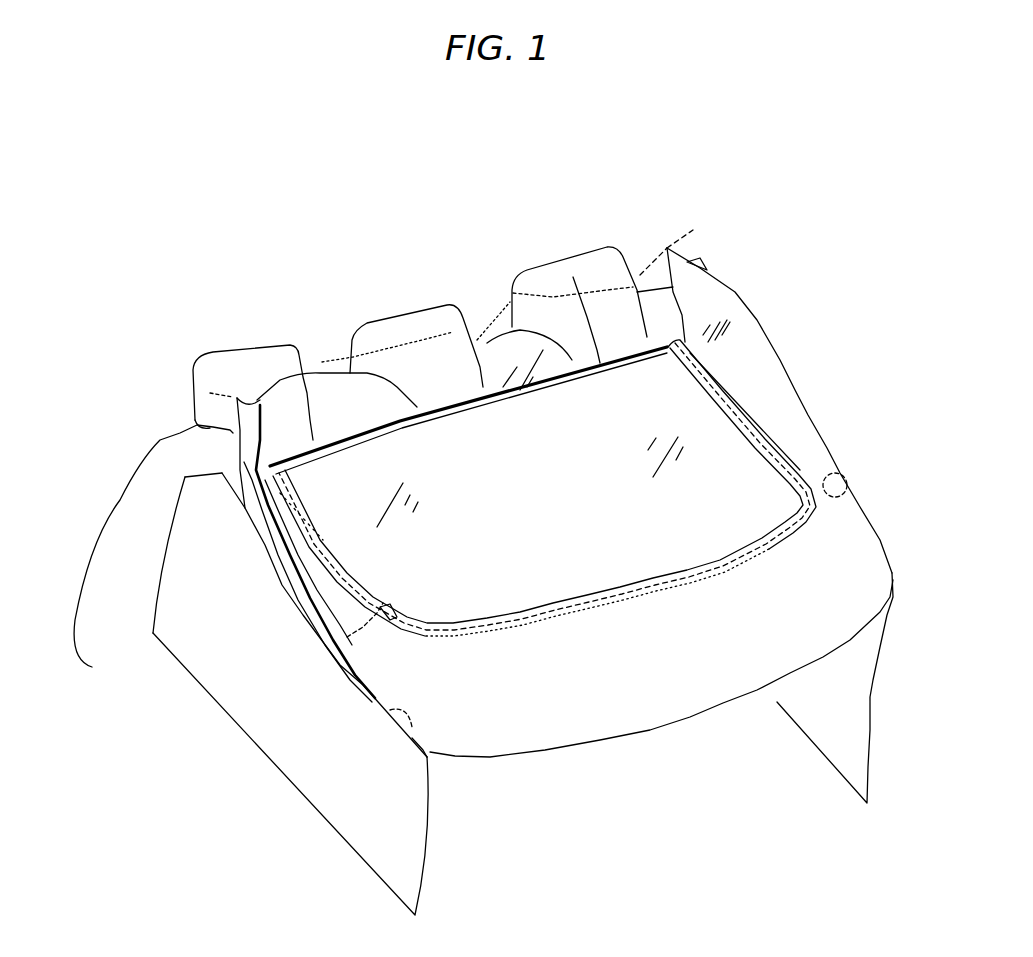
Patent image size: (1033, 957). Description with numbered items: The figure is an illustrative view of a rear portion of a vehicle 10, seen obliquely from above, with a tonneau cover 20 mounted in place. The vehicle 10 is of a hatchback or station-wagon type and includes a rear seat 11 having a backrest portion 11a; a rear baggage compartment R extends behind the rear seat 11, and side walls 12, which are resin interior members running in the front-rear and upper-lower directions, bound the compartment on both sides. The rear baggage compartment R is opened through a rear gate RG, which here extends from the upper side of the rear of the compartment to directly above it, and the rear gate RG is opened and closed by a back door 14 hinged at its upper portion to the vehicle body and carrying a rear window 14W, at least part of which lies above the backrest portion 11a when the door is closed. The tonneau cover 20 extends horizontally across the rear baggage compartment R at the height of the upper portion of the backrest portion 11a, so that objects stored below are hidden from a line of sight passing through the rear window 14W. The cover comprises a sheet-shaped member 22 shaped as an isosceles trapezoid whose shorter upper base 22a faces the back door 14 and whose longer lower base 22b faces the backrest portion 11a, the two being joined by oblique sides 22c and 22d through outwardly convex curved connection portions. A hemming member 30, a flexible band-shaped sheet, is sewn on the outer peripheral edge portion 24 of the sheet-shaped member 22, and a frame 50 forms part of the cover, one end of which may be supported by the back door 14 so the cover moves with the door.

The vehicle 10 is at (653, 178).
The rear seat 11 is at (160, 427).
The backrest portion 11a is at (327, 372).
The side wall 12 is at (863, 694).
The back door 14 is at (877, 521).
The rear window 14W is at (793, 408).
The tonneau cover 20 is at (680, 404).
The sheet-shaped member 22 is at (545, 525).
The upper base 22a is at (661, 668).
The lower base 22b is at (437, 403).
The oblique side 22c is at (747, 385).
The oblique side 22d is at (313, 590).
The outer peripheral edge portion 24 is at (388, 627).
The hemming member 30 is at (573, 277).
The frame 50 is at (810, 458).
The rear gate RG is at (395, 738).
The rear baggage compartment R is at (666, 793).